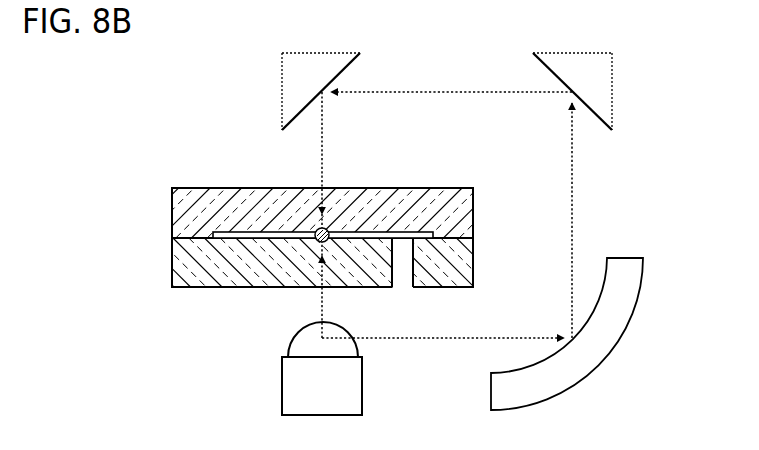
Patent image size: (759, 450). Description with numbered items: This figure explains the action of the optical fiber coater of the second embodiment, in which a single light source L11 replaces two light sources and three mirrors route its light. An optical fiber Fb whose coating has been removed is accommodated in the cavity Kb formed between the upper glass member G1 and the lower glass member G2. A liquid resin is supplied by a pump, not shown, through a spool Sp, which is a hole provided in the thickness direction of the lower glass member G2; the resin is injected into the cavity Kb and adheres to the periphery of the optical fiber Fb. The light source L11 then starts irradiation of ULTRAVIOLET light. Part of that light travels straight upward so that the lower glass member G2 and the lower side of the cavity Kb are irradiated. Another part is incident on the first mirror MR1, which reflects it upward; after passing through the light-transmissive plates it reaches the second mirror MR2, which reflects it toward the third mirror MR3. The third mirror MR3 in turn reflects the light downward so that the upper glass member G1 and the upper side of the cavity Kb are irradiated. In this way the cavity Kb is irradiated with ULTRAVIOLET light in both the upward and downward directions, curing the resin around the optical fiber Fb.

The first mirror MR1 is at (622, 337).
The second mirror MR2 is at (612, 78).
The third mirror MR3 is at (281, 80).
The upper glass member G1 is at (171, 212).
The lower glass member G2 is at (171, 275).
The optical fiber Fb is at (316, 230).
The cavity Kb is at (329, 228).
The spool Sp is at (413, 270).
The light source L11 is at (290, 343).
The ultraviolet light ULTRAVIOLET is at (318, 306).